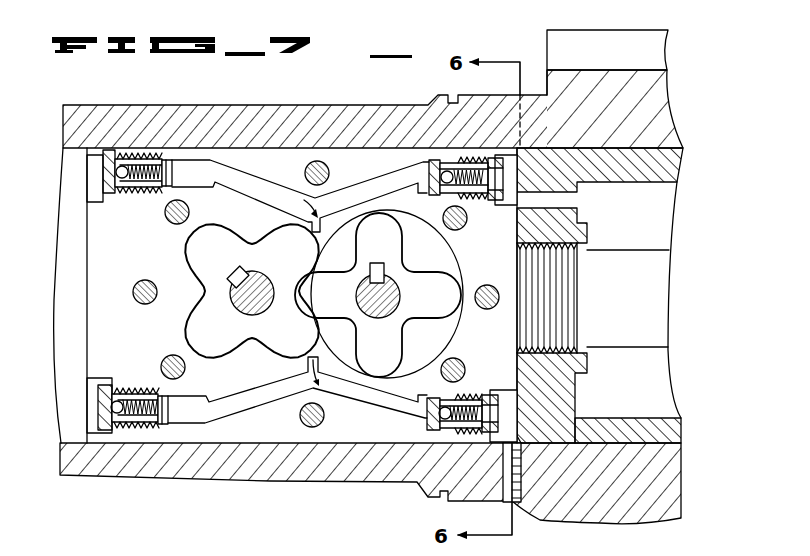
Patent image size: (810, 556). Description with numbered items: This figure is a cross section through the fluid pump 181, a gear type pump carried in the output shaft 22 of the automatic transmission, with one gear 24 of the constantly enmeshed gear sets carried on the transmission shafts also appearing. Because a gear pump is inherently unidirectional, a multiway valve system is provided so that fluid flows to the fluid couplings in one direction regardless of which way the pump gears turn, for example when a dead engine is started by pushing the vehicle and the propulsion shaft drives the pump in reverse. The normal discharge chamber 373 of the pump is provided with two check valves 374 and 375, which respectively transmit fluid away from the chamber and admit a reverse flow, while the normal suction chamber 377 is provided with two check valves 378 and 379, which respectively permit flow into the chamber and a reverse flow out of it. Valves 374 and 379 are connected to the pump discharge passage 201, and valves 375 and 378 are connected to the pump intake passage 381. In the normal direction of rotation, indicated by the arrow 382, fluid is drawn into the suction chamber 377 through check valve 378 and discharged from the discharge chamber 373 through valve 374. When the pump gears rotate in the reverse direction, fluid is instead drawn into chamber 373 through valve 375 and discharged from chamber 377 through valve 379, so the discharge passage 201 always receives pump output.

The output shaft 22 is at (100, 103).
The gear 24 is at (552, 44).
The discharge port 201 is at (508, 207).
The check valve 378 is at (112, 172).
The check valve 379 is at (441, 176).
The check valve 375 is at (112, 408).
The check valve 374 is at (440, 414).
The normal suction chamber 377 is at (318, 230).
The normal discharge chamber 373 is at (318, 356).
The pump intake passage 381 is at (66, 233).
The fluid pump 181 is at (80, 337).
The arrow 382 is at (196, 336).